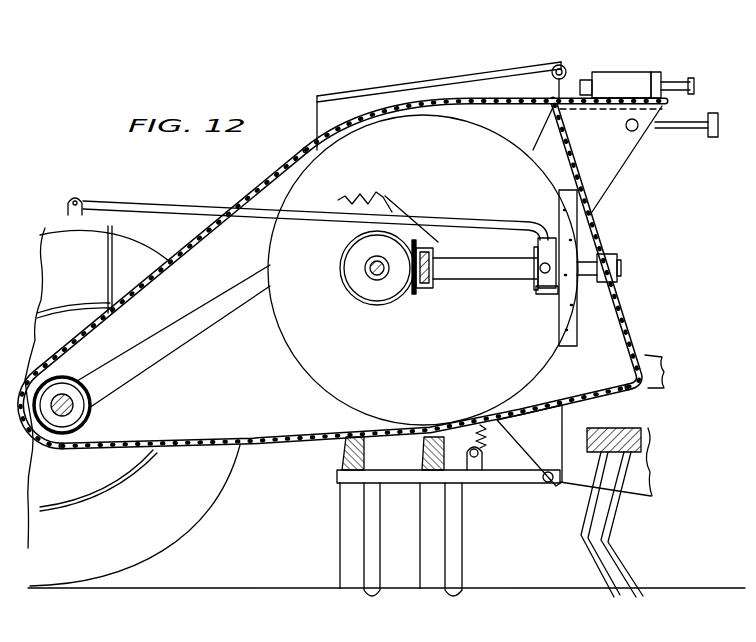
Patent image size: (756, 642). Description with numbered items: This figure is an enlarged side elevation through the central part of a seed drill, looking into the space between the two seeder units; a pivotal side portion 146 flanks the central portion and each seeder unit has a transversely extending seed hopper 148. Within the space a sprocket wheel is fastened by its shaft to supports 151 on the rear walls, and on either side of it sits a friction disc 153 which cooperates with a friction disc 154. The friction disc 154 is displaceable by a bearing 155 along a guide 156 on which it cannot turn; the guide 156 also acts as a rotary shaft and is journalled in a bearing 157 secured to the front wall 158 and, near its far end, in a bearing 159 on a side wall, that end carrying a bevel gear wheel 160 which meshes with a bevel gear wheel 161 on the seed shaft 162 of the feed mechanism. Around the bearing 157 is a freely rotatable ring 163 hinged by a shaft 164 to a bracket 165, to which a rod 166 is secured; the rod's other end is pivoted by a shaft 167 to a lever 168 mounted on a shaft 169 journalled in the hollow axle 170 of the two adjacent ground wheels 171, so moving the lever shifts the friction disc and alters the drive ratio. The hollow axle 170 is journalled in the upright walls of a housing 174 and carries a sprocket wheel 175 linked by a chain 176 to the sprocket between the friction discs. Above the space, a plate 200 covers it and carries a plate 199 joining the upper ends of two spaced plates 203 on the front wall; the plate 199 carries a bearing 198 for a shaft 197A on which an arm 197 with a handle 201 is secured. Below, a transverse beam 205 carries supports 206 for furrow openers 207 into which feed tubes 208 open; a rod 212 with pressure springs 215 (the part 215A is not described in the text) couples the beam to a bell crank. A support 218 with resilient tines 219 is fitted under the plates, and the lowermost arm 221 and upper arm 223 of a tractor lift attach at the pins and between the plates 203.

The portion 146 is at (352, 90).
The seed hopper 148 is at (417, 90).
The support 151 is at (394, 202).
The friction disc 153 is at (276, 330).
The friction disc 154 is at (558, 200).
The bearing 155 is at (550, 294).
The guide 156 is at (478, 280).
The bearing 157 is at (616, 256).
The front wall 158 is at (631, 316).
The bearing 159 is at (426, 292).
The bevel gear wheel 160 is at (414, 294).
The bevel gear wheel 161 is at (346, 284).
The seed shaft 162 is at (366, 266).
The ring 163 is at (538, 286).
The shaft 164 is at (538, 268).
The bracket 165 is at (540, 239).
The rod 166 is at (150, 200).
The shaft 167 is at (68, 202).
The lever 168 is at (80, 196).
The shaft 169 is at (72, 398).
The hollow axle 170 is at (88, 402).
The ground wheel 171 is at (174, 549).
The housing 174 is at (252, 192).
The sprocket wheel 175 is at (84, 412).
The chain 176 is at (204, 294).
The arm 197 is at (660, 62).
The shaft 197A is at (593, 78).
The bearing 198 is at (629, 72).
The plate 199 is at (570, 96).
The plate 200 is at (522, 105).
The handle 201 is at (690, 80).
The plate 203 is at (620, 168).
The beam 205 is at (552, 484).
The support 206 is at (400, 483).
The furrow opener 207 is at (422, 566).
The feed tube 208 is at (419, 454).
The rod 212 is at (489, 440).
The pressure spring 215 is at (470, 428).
The track plate 215A is at (565, 413).
The support 218 is at (590, 452).
The resilient tine 219 is at (600, 544).
The lowermost arm 221 is at (652, 383).
The upper arm 223 is at (666, 130).